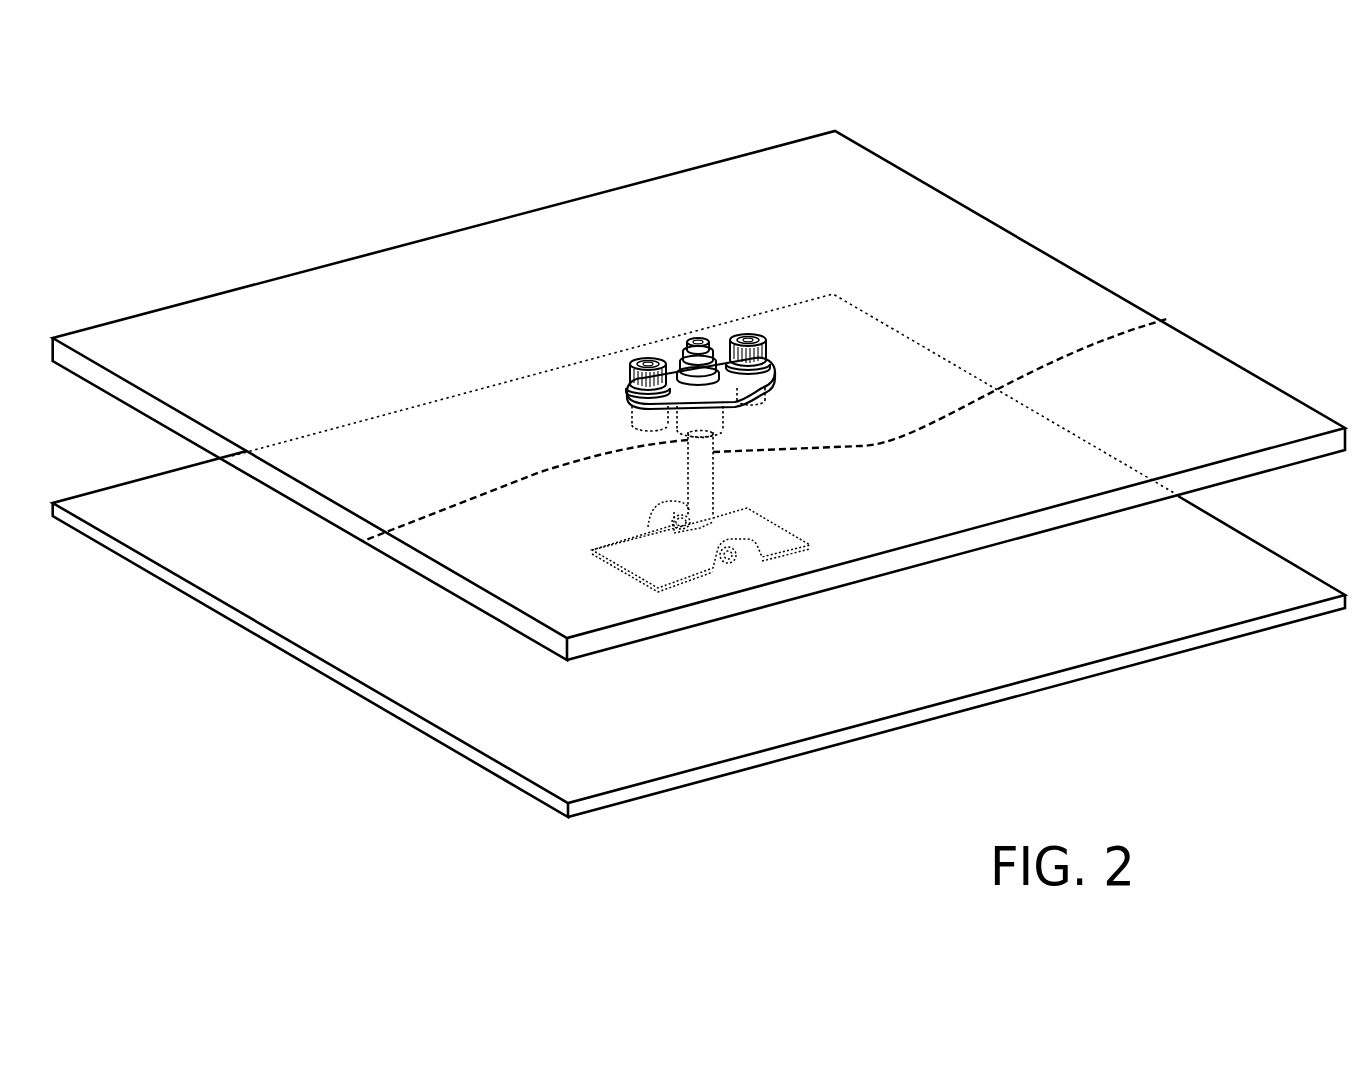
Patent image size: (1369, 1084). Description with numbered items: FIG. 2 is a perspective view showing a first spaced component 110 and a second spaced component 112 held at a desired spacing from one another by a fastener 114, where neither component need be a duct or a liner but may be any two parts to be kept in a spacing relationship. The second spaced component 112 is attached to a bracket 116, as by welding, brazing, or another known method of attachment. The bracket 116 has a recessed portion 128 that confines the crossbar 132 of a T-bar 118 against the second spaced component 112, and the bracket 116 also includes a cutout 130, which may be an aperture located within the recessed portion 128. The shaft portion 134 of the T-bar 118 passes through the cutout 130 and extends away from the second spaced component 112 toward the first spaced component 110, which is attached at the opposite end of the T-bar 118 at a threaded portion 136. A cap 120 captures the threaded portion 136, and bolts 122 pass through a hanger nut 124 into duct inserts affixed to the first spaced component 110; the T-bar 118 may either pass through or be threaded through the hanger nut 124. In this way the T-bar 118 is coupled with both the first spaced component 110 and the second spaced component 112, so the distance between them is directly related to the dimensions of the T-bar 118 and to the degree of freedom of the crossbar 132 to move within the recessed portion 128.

The first spaced component 110 is at (968, 256).
The second spaced component 112 is at (1163, 588).
The fastener 114 is at (752, 443).
The bracket 116 is at (627, 572).
The T-bar 118 is at (740, 478).
The cap 120 is at (697, 340).
The bolts 122 is at (648, 360).
The hanger nut 124 is at (727, 383).
The recessed portion 128 is at (635, 533).
The cutout 130 is at (688, 518).
The crossbar 132 is at (728, 555).
The shaft portion 134 is at (1167, 319).
The threaded portion 136 is at (363, 541).